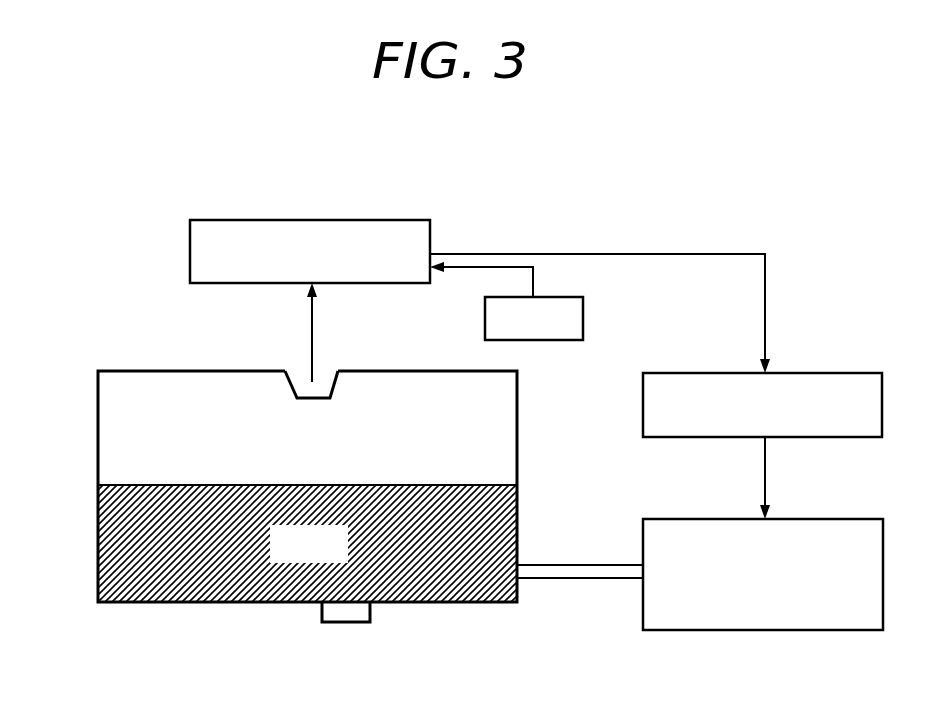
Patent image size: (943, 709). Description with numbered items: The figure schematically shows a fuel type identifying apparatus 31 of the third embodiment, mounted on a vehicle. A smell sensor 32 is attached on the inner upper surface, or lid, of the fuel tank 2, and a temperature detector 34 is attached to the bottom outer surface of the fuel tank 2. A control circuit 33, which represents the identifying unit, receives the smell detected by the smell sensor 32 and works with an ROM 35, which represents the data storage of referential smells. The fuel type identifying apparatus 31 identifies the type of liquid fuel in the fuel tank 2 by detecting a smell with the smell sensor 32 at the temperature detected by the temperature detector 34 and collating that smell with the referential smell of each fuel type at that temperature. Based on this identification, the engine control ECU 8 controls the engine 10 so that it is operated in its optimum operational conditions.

The fuel tank 2 is at (108, 370).
The engine control ECU 8 is at (860, 372).
The engine 10 is at (858, 518).
The fuel type identifying apparatus 31 is at (236, 164).
The smell sensor 32 is at (295, 371).
The control circuit 33 is at (393, 220).
The temperature detector 34 is at (362, 622).
The ROM 35 is at (583, 310).